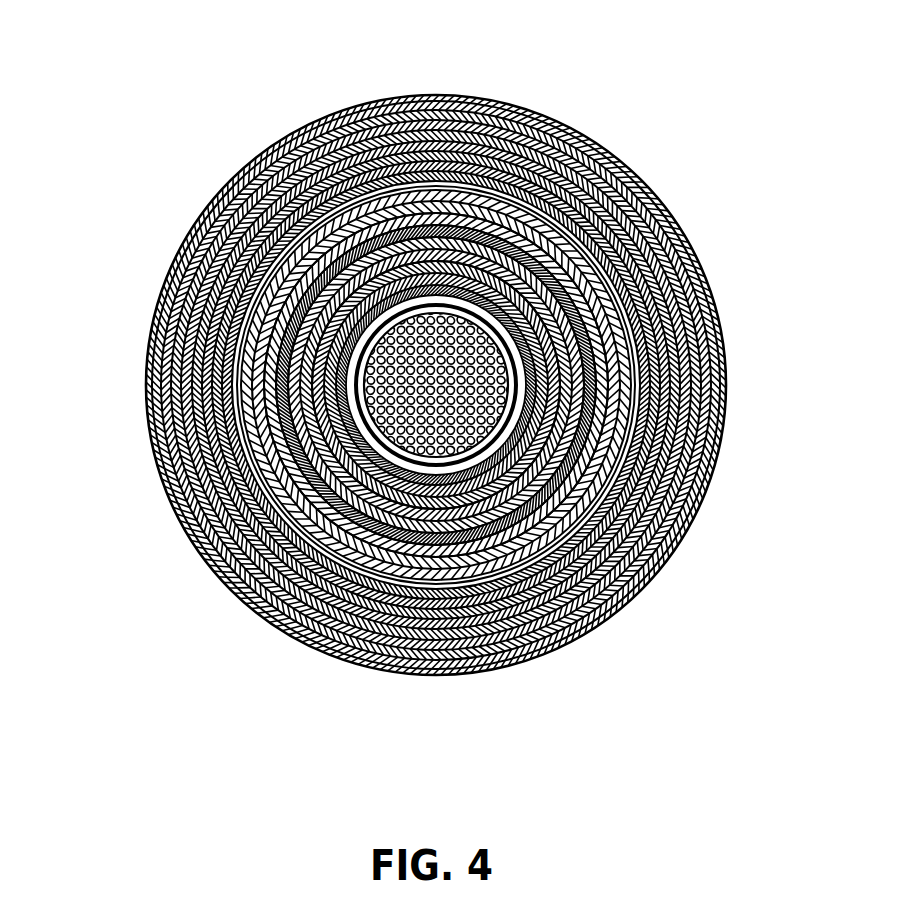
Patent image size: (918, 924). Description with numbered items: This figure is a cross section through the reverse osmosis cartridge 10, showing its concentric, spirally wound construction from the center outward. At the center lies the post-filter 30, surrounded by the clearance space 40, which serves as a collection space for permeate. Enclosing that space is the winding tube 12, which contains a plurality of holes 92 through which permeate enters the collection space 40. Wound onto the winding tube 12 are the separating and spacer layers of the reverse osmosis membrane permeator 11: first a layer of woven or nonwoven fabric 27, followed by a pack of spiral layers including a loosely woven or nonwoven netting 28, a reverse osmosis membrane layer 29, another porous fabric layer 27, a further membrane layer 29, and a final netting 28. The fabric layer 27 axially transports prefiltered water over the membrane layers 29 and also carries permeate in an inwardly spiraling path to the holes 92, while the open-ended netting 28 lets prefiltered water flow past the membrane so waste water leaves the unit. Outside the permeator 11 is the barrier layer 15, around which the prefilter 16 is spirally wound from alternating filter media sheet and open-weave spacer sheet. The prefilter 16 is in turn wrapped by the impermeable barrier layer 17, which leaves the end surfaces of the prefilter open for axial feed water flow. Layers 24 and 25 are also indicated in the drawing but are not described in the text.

The reverse osmosis cartridge 10 is at (186, 189).
The reverse osmosis membrane permeator 11 is at (547, 627).
The winding tube 12 is at (650, 460).
The barrier layer 15 is at (608, 567).
The prefilter 16 is at (665, 328).
The impermeable barrier layer 17 is at (655, 515).
The armor wire layer 24 is at (267, 143).
The armor wire layer 25 is at (340, 97).
The fabric layer 27 is at (445, 232).
The netting 28 is at (482, 200).
The reverse osmosis membrane layer 29 is at (620, 151).
The post-filter 30 is at (620, 260).
The clearance space 40 is at (197, 543).
The holes 92 is at (398, 85).